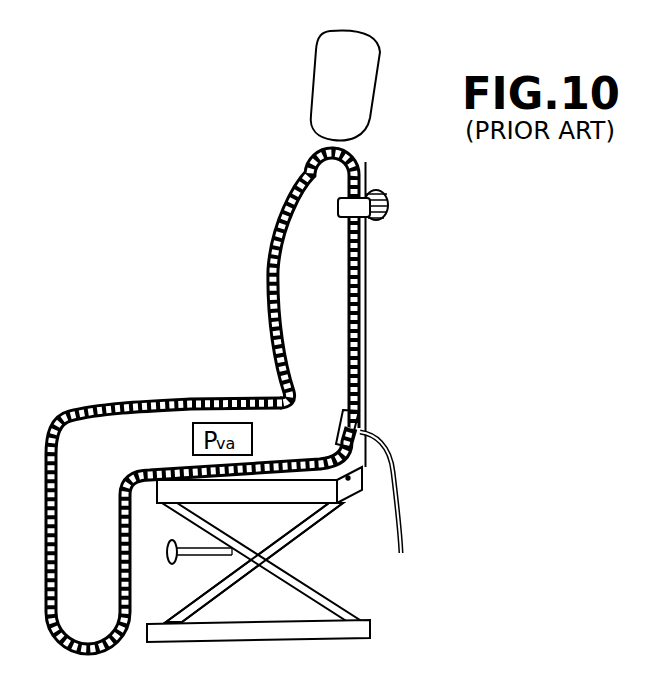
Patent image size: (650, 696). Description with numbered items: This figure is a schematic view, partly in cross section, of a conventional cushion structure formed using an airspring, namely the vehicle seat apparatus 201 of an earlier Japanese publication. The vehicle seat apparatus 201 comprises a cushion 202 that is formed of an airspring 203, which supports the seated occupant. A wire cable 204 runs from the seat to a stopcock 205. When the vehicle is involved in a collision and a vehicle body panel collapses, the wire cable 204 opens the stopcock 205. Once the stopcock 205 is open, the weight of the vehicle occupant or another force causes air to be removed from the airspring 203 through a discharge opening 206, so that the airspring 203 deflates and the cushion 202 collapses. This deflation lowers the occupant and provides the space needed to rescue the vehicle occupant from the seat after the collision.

The vehicle seat apparatus 201 is at (238, 144).
The cushion 202 is at (141, 397).
The airspring 203 is at (323, 296).
The wire cable 204 is at (398, 523).
The stopcock 205 is at (364, 421).
The discharge opening 206 is at (373, 391).